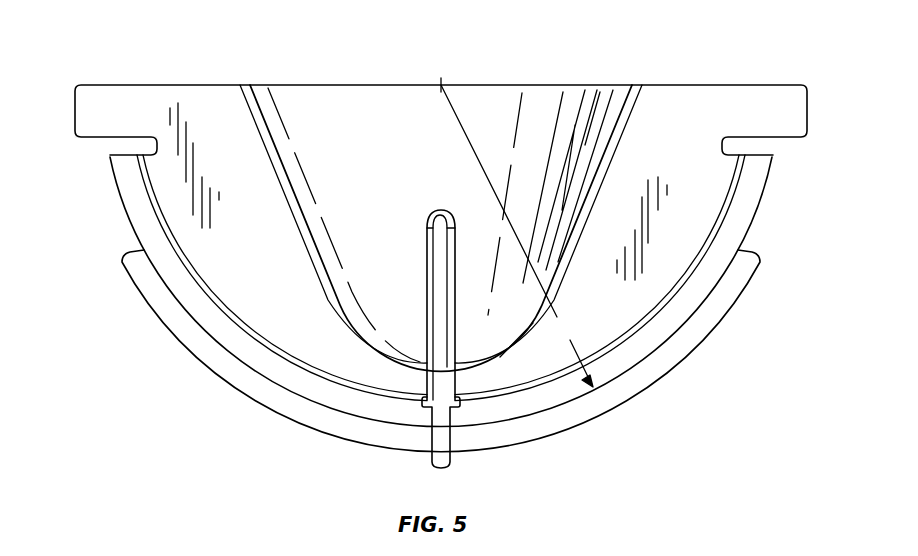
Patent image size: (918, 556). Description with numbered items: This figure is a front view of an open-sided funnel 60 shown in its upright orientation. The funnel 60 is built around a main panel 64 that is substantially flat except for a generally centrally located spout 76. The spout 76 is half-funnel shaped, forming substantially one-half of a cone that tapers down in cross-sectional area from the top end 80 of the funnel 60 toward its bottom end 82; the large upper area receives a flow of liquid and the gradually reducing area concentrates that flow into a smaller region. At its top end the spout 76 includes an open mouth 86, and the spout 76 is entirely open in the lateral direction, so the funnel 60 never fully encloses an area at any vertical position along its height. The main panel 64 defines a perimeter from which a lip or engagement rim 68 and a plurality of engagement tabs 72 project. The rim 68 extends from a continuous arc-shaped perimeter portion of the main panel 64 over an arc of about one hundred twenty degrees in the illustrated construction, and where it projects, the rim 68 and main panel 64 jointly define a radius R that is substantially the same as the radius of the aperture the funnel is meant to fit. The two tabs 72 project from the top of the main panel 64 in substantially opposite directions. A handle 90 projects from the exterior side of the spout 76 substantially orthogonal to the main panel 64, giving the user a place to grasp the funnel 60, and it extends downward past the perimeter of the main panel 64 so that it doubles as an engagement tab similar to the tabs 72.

The funnel 60 is at (135, 48).
The main panel 64 is at (187, 198).
The engagement rim 68 is at (652, 368).
The engagement tabs 72 is at (98, 117).
The spout 76 is at (530, 150).
The top end 80 is at (292, 68).
The bottom end 82 is at (361, 454).
The open mouth 86 is at (370, 85).
The handle 90 is at (442, 438).
The radius R is at (517, 236).